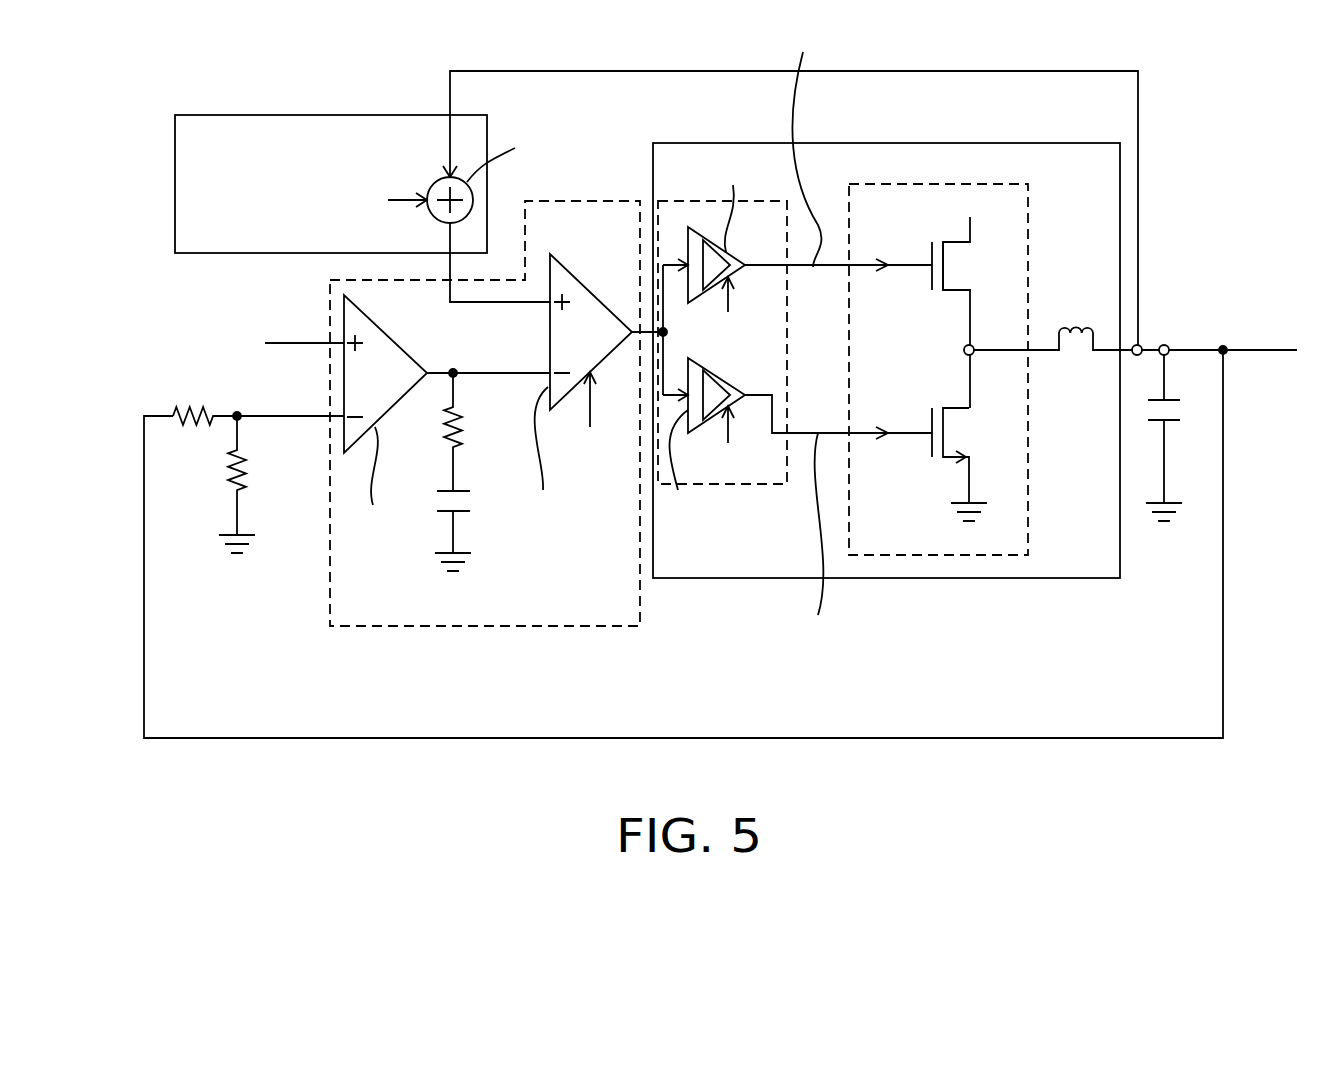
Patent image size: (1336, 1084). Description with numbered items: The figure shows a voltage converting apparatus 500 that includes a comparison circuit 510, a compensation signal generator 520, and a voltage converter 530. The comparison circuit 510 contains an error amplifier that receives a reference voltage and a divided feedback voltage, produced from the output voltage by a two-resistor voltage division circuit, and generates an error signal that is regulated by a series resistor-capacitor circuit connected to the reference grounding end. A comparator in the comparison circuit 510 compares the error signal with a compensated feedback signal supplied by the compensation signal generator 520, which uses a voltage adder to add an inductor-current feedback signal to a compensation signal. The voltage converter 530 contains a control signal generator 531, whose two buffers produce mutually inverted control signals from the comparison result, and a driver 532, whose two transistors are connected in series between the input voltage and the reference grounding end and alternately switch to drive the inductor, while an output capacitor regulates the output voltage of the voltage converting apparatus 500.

The voltage converting apparatus 500 is at (1326, 789).
The comparison circuit 510 is at (421, 626).
The compensation signal generator 520 is at (303, 114).
The voltage converter 530 is at (968, 143).
The control signal generator 531 is at (692, 198).
The driver 532 is at (893, 182).